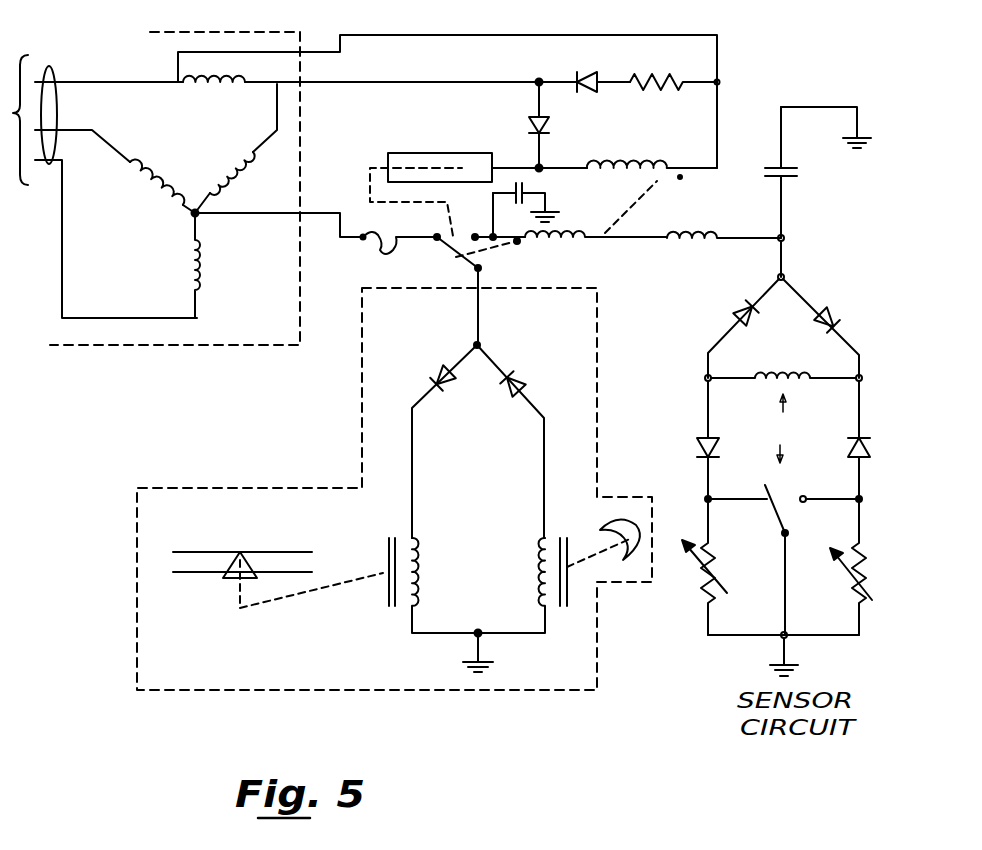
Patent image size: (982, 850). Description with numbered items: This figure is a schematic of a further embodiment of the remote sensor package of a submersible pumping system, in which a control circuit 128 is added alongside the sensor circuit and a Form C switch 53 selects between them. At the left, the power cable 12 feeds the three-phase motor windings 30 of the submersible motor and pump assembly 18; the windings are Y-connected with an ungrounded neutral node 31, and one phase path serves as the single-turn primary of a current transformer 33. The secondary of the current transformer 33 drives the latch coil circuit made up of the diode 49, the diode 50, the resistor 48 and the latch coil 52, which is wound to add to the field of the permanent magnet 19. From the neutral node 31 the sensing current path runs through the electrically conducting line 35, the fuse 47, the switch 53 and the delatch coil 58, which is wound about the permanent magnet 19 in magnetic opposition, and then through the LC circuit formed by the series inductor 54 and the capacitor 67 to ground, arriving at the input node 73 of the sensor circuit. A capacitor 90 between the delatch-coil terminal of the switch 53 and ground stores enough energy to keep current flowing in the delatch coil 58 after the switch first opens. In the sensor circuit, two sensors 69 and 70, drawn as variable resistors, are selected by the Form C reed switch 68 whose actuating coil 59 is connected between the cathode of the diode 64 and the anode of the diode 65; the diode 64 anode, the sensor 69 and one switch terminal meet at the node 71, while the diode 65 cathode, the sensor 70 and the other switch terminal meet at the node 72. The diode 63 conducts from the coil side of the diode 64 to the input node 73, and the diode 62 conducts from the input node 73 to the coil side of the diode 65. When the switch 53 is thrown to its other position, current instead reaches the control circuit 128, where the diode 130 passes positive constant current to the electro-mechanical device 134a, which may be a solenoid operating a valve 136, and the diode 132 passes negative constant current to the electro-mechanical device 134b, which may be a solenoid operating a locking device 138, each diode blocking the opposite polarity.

The power cable 12 is at (52, 70).
The submersible motor and pump assembly 18 is at (155, 346).
The permanent magnet 19 is at (421, 153).
The motor windings 30 is at (176, 213).
The neutral node 31 is at (197, 215).
The current transformer 33 is at (210, 93).
The electrically conducting line 35 is at (340, 213).
The fuse 47 is at (393, 241).
The resistor 48 is at (645, 76).
The diode 49 is at (577, 79).
The diode 50 is at (530, 135).
The latch coil 52 is at (640, 180).
The switch 53 is at (436, 246).
The series inductor 54 is at (683, 241).
The delatch coil 58 is at (584, 235).
The actuating coil 59 is at (782, 375).
The diode 62 is at (839, 323).
The diode 63 is at (743, 303).
The diode 64 is at (705, 457).
The diode 65 is at (869, 440).
The capacitor 67 is at (788, 168).
The Form C switch 68 is at (792, 511).
The sensor 69 is at (718, 575).
The sensor 70 is at (850, 582).
The node 71 is at (705, 499).
The node 72 is at (862, 499).
The input node 73 is at (784, 238).
The capacitor 90 is at (531, 191).
The control circuit 128 is at (362, 386).
The diode 130 is at (450, 392).
The diode 132 is at (555, 362).
The electro-mechanical device 134a is at (418, 561).
The electro-mechanical device 134b is at (537, 586).
The valve 136 is at (235, 578).
The locking device 138 is at (612, 520).